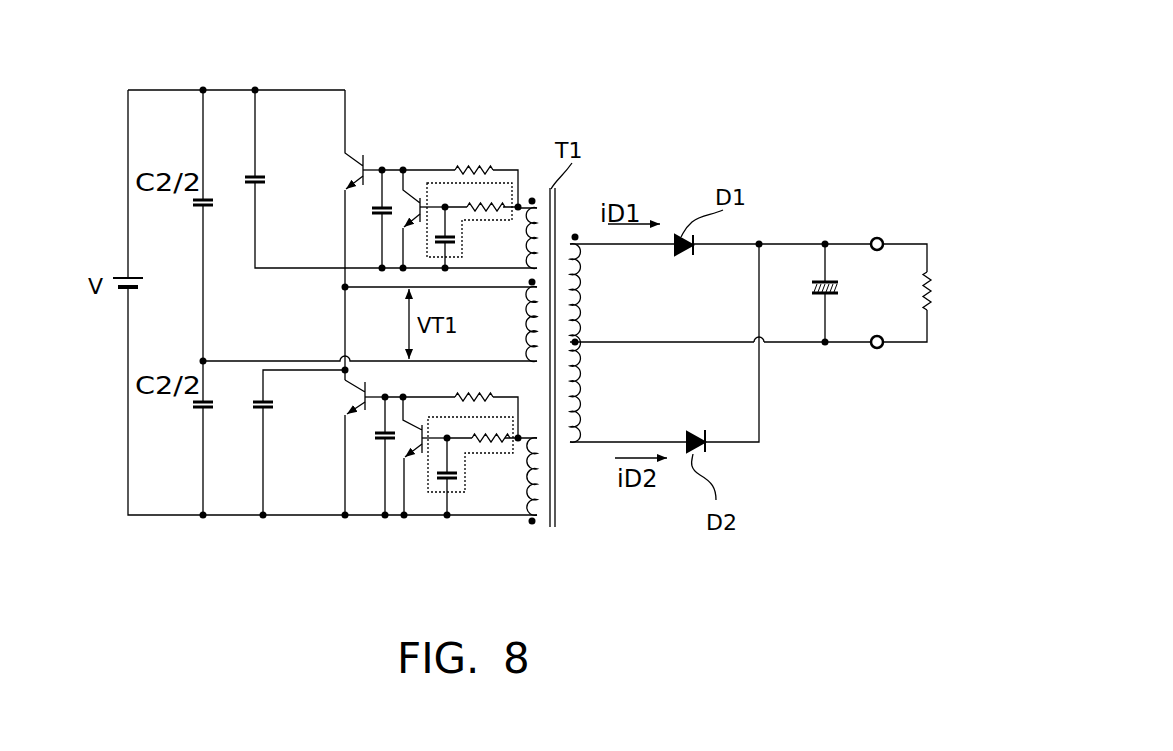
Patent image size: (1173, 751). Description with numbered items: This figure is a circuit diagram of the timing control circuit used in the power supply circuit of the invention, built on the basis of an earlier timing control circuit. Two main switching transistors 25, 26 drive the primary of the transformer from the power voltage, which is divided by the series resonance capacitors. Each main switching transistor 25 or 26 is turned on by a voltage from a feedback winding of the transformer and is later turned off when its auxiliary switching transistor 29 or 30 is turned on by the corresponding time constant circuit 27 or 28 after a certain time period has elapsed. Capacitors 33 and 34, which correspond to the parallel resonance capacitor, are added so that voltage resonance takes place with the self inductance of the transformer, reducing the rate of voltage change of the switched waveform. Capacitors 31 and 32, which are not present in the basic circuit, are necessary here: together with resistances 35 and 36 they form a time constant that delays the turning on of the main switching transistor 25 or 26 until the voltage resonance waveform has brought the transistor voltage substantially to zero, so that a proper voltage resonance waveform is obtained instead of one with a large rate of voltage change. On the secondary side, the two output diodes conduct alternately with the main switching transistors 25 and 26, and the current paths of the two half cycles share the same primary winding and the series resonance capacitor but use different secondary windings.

The main switching transistor 25 is at (352, 167).
The main switching transistor 26 is at (353, 413).
The time constant circuit 27 is at (462, 226).
The time constant circuit 28 is at (465, 458).
The auxiliary switching transistor 29 is at (412, 205).
The auxiliary switching transistor 30 is at (410, 456).
The capacitor 31 is at (386, 207).
The capacitor 32 is at (379, 444).
The capacitor 33 is at (265, 175).
The capacitor 34 is at (256, 408).
The resistance 35 is at (480, 170).
The resistance 36 is at (472, 395).